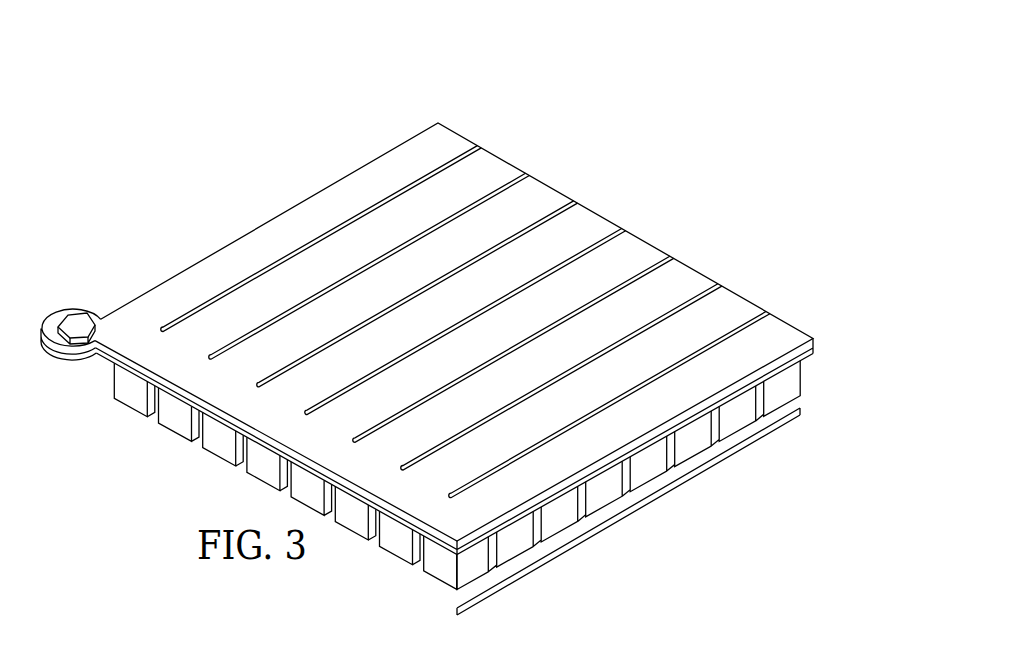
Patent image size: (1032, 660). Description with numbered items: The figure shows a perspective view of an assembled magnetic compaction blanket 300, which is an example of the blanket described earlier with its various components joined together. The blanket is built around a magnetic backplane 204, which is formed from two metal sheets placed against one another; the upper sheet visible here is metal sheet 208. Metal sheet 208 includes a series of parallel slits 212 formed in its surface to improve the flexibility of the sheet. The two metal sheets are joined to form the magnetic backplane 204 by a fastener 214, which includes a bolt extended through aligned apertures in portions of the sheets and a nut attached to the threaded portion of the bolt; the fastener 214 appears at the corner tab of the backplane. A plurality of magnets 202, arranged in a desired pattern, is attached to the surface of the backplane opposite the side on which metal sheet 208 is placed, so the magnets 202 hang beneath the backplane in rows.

The magnetic compaction blanket 300 is at (473, 319).
The plurality of magnets 202 is at (632, 507).
The magnetic backplane 204 is at (831, 344).
The metal sheet 208 is at (273, 230).
The slits 212 is at (427, 172).
The fastener 214 is at (82, 294).